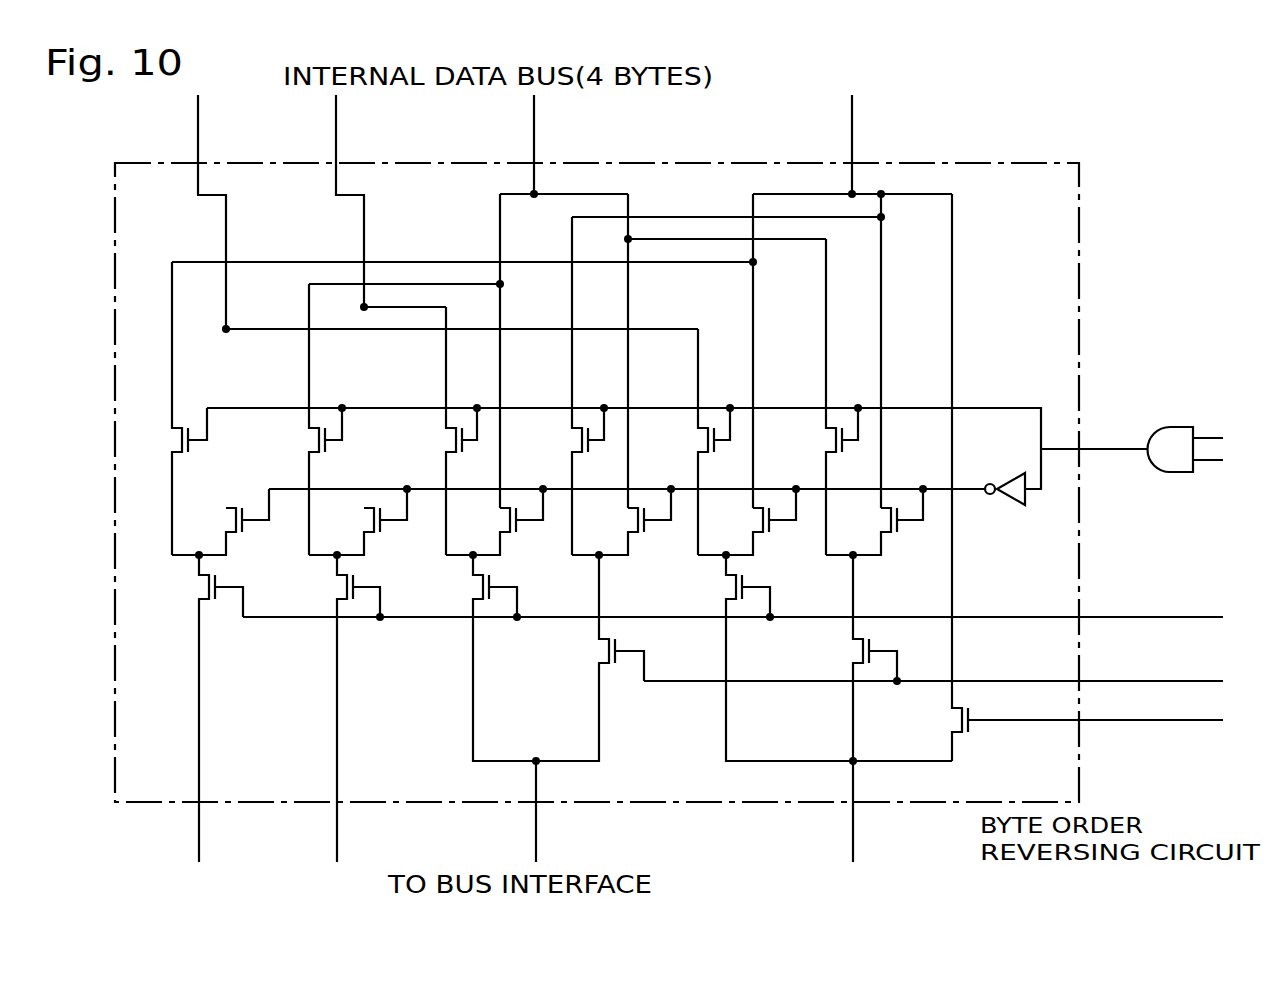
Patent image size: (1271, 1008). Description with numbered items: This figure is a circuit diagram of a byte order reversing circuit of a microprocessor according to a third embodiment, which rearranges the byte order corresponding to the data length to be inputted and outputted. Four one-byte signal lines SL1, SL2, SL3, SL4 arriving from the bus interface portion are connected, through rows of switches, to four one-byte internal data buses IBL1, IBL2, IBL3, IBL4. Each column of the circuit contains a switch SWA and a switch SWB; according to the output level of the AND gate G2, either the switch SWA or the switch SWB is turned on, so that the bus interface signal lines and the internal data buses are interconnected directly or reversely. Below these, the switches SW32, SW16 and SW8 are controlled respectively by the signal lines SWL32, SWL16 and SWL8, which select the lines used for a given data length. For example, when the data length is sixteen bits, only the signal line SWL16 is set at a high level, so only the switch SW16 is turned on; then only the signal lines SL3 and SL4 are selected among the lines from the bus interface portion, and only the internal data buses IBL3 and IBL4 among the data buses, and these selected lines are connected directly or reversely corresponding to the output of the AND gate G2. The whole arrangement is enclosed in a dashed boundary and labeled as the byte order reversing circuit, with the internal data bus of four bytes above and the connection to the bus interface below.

The internal data bus IBL1 is at (197, 212).
The internal data bus IBL2 is at (333, 201).
The internal data bus IBL3 is at (564, 146).
The internal data bus IBL4 is at (852, 146).
The switch SWB is at (636, 386).
The switch SWA is at (598, 514).
The switch SW32 is at (453, 588).
The switch SW16 is at (716, 620).
The switch SW8 is at (1063, 477).
The signal line SWL32 is at (733, 604).
The signal line SWL16 is at (933, 668).
The signal line SWL8 is at (1095, 707).
The signal line SL1 is at (184, 731).
The signal line SL2 is at (322, 731).
The signal line SL3 is at (536, 731).
The signal line SL4 is at (839, 731).
The AND gate G2 is at (1180, 468).